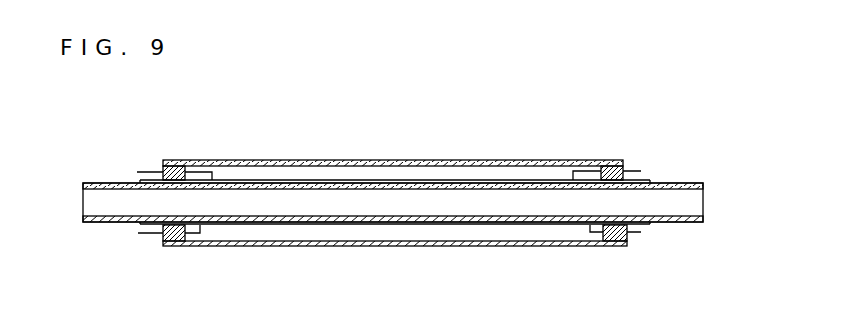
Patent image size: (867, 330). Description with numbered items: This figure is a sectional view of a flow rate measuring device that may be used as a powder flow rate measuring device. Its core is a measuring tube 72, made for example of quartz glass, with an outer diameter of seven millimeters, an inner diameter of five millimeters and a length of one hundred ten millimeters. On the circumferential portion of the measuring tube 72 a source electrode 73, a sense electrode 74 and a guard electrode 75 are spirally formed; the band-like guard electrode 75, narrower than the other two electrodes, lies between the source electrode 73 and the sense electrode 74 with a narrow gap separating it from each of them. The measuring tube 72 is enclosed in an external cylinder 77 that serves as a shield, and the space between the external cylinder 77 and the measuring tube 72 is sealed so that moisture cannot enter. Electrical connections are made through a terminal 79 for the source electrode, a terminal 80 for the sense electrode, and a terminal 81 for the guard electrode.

The measuring tube 72 is at (686, 182).
The source electrode 73 is at (433, 178).
The sense electrode 74 is at (468, 226).
The guard electrode 75 is at (593, 222).
The external cylinder 77 is at (534, 161).
The terminal for the source electrode 79 is at (637, 168).
The terminal for the sense electrode 80 is at (143, 172).
The terminal for the guard electrode 81 is at (147, 238).